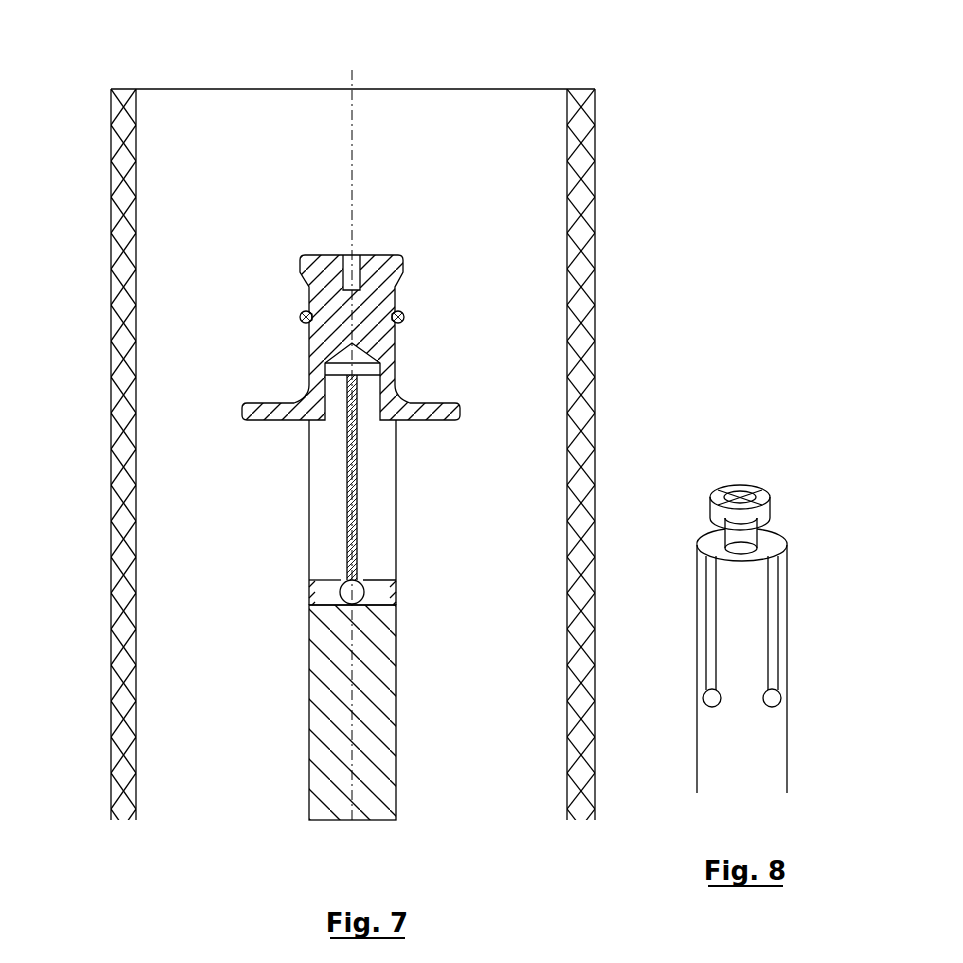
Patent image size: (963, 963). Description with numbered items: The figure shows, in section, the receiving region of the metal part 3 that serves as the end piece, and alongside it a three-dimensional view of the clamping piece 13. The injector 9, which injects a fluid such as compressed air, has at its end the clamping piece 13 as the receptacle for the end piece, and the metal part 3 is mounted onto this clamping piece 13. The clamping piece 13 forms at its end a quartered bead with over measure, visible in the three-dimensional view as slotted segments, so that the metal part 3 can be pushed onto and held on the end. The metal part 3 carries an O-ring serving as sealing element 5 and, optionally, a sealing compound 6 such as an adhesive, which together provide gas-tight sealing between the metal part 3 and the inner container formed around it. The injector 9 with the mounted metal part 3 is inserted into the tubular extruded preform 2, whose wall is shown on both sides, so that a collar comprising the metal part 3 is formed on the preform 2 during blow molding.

In FIG. 7, the tubular extruded preform 2 is at (584, 106).
In FIG. 7, the metal part 3 is at (402, 266).
In FIG. 8, the metal part 3 is at (774, 497).
In FIG. 7, the sealing element 5 is at (406, 314).
In FIG. 7, the sealing compound 6 is at (402, 379).
In FIG. 7, the injector 9 is at (320, 684).
In FIG. 7, the clamping piece 13 is at (380, 473).
In FIG. 8, the clamping piece 13 is at (720, 602).